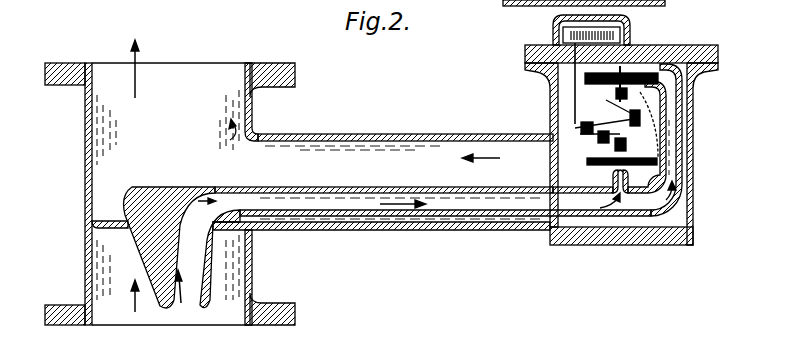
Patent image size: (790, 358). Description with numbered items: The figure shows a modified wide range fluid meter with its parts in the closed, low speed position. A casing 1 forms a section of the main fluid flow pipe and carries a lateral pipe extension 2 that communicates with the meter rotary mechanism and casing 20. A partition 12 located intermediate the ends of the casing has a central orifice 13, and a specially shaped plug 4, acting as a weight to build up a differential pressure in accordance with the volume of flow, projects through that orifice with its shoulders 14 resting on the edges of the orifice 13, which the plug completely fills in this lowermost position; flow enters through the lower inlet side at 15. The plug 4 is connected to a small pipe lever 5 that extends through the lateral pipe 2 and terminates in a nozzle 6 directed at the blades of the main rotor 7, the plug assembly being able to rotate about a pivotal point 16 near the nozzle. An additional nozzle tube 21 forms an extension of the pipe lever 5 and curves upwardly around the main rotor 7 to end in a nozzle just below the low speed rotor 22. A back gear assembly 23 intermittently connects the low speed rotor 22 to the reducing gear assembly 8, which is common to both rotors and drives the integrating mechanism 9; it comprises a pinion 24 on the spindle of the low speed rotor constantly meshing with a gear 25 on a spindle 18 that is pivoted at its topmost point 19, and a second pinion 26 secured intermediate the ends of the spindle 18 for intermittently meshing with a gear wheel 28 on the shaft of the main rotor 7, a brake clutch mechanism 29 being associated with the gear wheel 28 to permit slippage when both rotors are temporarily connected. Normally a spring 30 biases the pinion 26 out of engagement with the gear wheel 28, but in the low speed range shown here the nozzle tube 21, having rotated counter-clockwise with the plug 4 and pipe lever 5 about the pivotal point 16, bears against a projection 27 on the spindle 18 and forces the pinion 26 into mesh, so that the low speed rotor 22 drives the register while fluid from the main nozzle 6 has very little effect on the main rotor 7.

The casing 1 is at (78, 78).
The lateral pipe extension 2 is at (406, 138).
The plug 4 is at (200, 304).
The pipe lever 5 is at (461, 209).
The nozzle 6 is at (630, 180).
The main rotor 7 is at (588, 161).
The reducing gear assembly 8 is at (580, 150).
The integrating mechanism 9 is at (532, 31).
The partition 12 is at (118, 221).
The central orifice 13 is at (124, 229).
The shoulders 14 is at (250, 232).
The inlet opening 15 is at (177, 308).
The pivotal point 16 is at (614, 174).
The spindle 18 is at (676, 135).
The pivot 19 is at (640, 93).
The meter rotary mechanism and casing 20 is at (665, 275).
The nozzle tube 21 is at (676, 150).
The low speed rotor 22 is at (632, 86).
The back gear assembly 23 is at (595, 120).
The pinion 24 is at (616, 93).
The gear 25 is at (658, 80).
The second pinion 26 is at (650, 125).
The projection 27 is at (644, 112).
The gear wheel 28 is at (590, 128).
The brake clutch mechanism 29 is at (598, 134).
The spring 30 is at (619, 125).